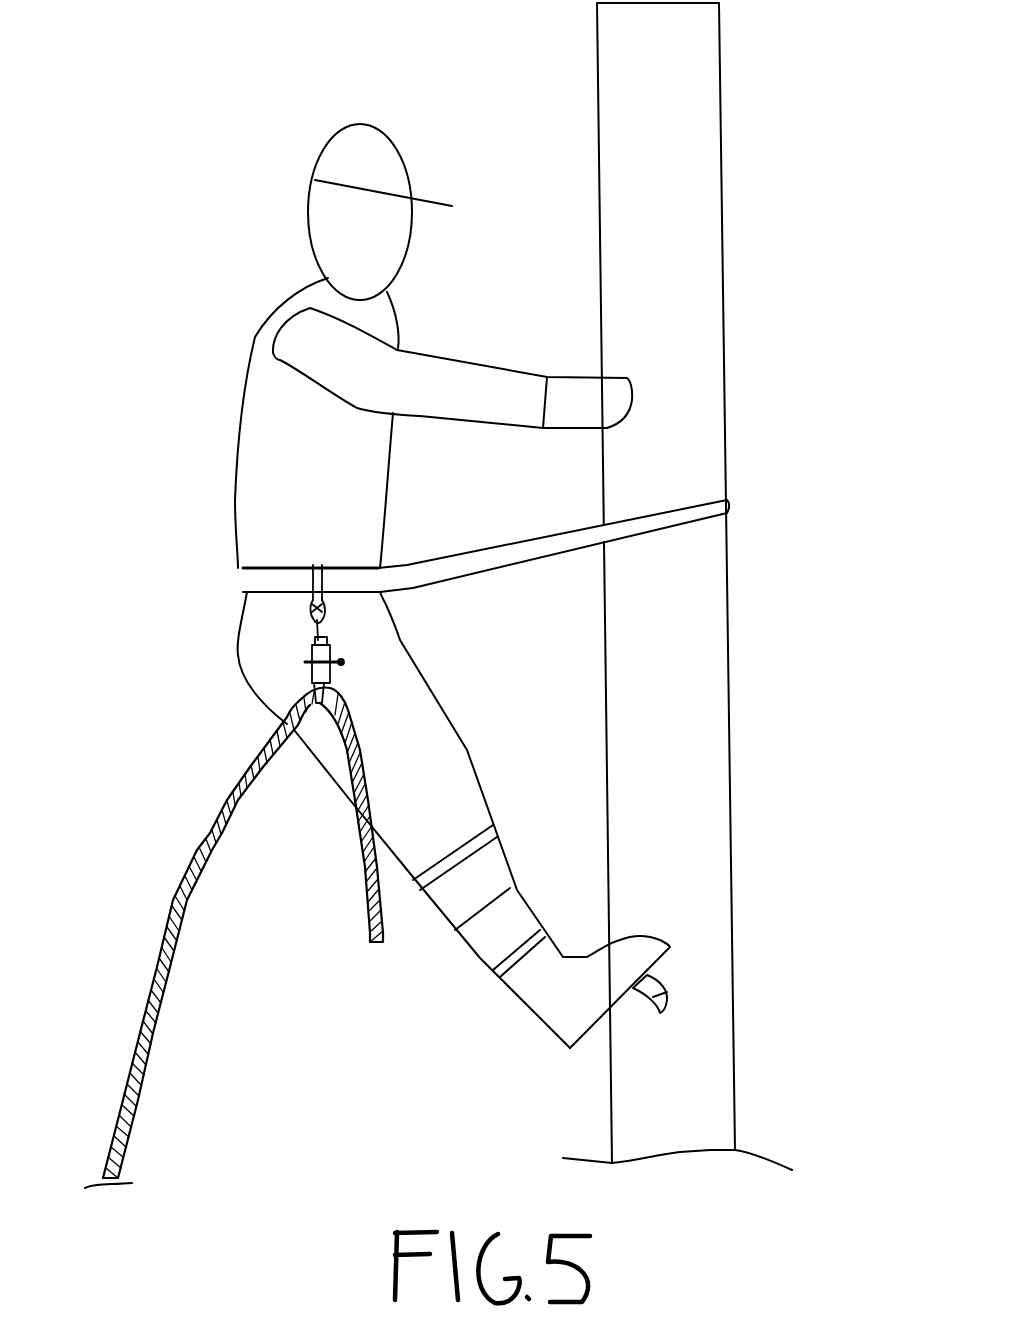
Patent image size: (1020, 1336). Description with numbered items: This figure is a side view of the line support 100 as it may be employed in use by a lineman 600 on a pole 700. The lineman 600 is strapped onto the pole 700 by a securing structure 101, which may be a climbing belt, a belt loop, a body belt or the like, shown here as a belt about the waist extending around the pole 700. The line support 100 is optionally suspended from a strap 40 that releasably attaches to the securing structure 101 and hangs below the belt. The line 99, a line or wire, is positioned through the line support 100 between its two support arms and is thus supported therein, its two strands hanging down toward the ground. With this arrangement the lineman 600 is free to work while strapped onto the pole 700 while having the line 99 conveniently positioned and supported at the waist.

The pole 700 is at (713, 122).
The lineman 600 is at (257, 370).
The securing structure 101 is at (240, 578).
The strap 40 is at (313, 625).
The line support 100 is at (310, 648).
The line 99 is at (197, 840).